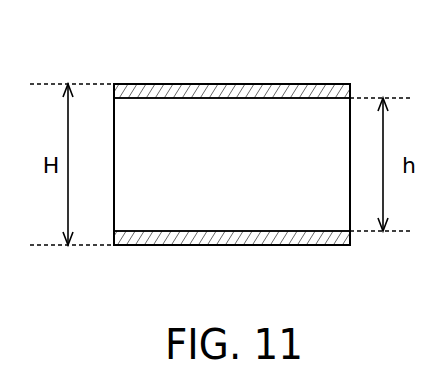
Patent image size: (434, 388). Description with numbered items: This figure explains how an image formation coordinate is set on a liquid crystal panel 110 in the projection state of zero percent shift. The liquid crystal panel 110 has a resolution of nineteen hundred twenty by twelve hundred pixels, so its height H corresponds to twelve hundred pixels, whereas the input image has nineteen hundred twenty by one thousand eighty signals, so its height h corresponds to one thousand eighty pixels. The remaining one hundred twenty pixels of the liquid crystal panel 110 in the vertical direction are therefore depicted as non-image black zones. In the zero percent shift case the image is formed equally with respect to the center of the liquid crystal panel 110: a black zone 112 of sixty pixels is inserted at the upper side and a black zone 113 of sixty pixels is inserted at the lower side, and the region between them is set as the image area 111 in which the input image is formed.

The liquid crystal panel 110 is at (158, 83).
The image area 111 is at (207, 212).
The black zone 112 is at (330, 83).
The black zone 113 is at (275, 236).